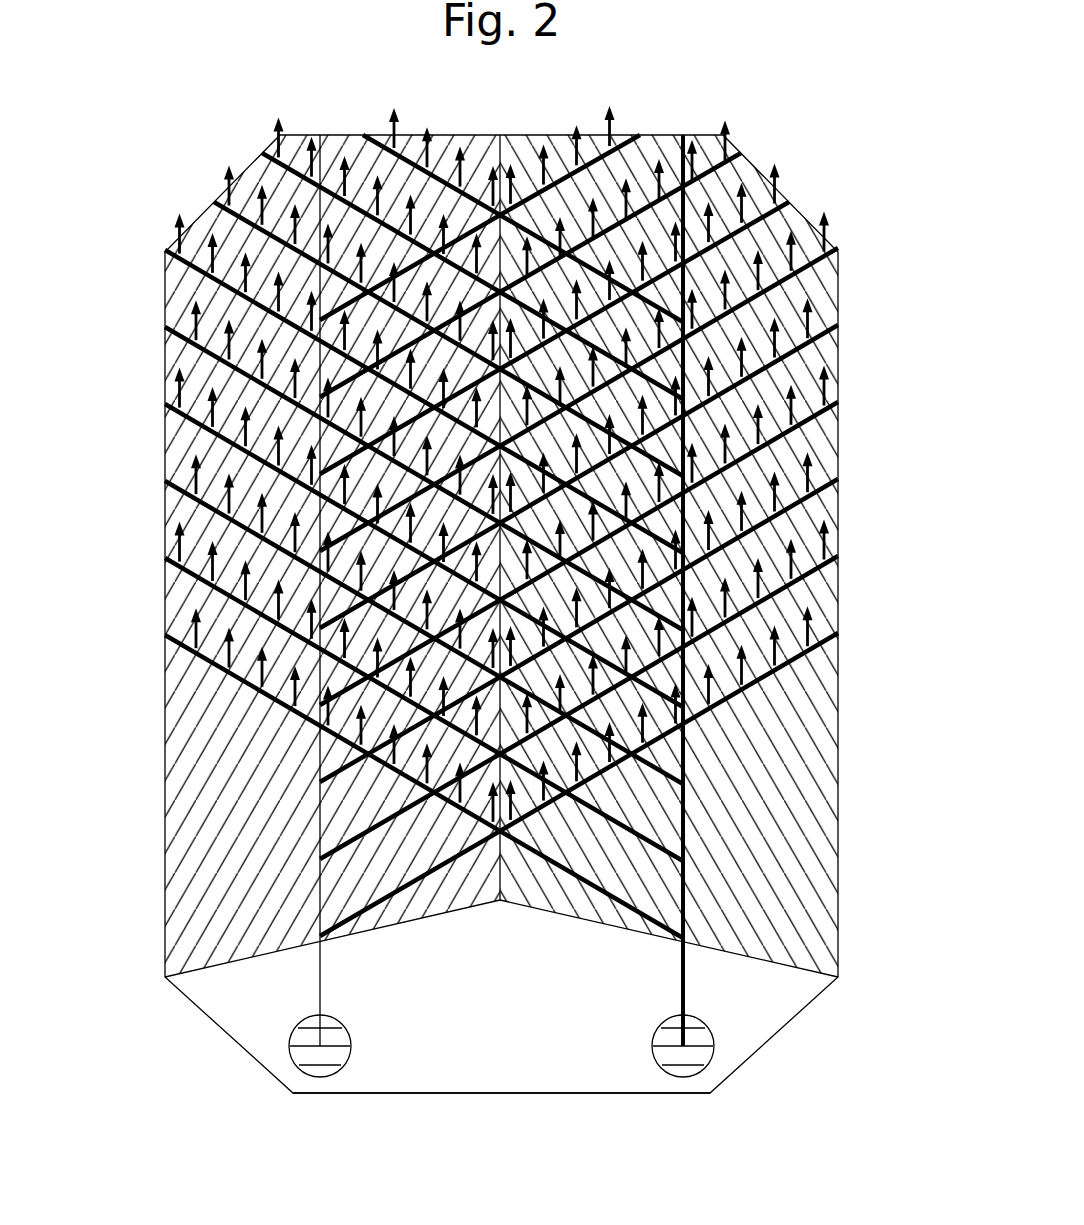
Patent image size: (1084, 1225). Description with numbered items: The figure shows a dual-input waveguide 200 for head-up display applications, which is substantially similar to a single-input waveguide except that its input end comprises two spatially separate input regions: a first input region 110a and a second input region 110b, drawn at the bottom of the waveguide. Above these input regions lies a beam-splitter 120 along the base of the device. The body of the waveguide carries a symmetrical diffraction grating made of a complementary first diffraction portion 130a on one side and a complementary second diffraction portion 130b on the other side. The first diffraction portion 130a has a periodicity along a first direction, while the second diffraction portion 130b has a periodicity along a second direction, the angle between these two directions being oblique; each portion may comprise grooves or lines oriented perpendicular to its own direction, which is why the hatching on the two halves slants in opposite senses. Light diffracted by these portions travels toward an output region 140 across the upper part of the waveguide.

The dual-input waveguide 200 is at (252, 118).
The output region 140 is at (165, 373).
The first diffraction portion 130a is at (235, 802).
The second diffraction portion 130b is at (780, 823).
The beam-splitter 120 is at (460, 1048).
The first input region 110a is at (317, 1076).
The second input region 110b is at (678, 1076).